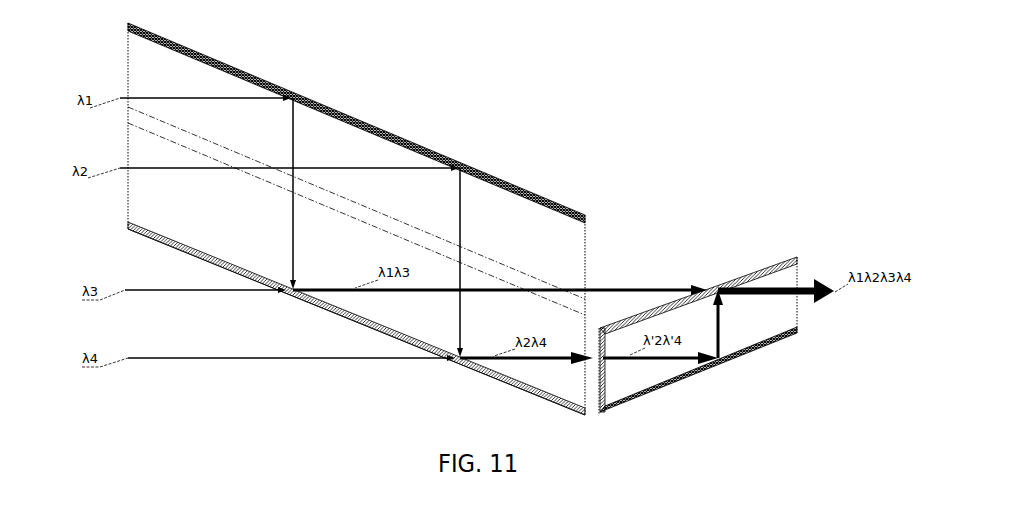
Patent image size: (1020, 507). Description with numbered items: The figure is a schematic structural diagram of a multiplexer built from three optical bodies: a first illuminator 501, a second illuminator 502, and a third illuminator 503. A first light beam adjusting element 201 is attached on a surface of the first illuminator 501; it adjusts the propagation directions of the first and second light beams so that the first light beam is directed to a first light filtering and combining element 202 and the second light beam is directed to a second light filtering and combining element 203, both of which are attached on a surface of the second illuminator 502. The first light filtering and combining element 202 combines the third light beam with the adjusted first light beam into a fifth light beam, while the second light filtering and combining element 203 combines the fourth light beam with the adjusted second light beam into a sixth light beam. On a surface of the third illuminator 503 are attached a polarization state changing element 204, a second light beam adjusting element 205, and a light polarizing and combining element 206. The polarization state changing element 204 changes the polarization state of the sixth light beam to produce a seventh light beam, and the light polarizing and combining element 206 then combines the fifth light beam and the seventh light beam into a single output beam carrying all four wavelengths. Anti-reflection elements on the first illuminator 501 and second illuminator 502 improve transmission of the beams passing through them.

The first light beam adjusting element 201 is at (372, 130).
The first light filtering and combining element 202 is at (205, 257).
The second light filtering and combining element 203 is at (366, 326).
The polarization state changing element 204 is at (605, 386).
The second light beam adjusting element 205 is at (798, 334).
The light polarizing and combining element 206 is at (772, 264).
The first illuminator 501 is at (175, 70).
The second illuminator 502 is at (170, 222).
The third illuminator 503 is at (755, 328).